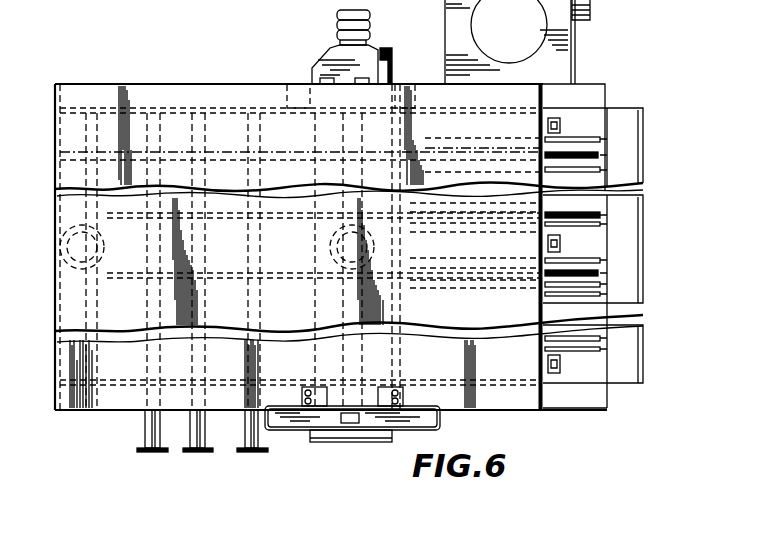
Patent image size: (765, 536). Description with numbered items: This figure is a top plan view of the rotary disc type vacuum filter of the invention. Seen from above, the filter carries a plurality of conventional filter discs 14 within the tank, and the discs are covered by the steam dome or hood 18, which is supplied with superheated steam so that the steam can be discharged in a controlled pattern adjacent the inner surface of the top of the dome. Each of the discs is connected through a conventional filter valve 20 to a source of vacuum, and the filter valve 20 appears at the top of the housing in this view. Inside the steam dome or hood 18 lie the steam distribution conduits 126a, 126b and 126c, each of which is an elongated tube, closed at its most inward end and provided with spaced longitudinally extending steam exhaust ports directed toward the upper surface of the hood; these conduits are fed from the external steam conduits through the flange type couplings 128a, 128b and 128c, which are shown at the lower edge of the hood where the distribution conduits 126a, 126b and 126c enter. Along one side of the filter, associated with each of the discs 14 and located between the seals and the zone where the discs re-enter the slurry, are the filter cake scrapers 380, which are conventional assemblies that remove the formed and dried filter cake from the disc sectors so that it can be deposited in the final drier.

The filter discs 14 is at (100, 152).
The steam dome or hood 18 is at (218, 125).
The filter valve 20 is at (328, 56).
The filter cake scrapers 380 is at (596, 168).
The steam distribution conduit 126a is at (290, 462).
The steam distribution conduit 126b is at (192, 440).
The steam distribution conduit 126c is at (147, 432).
The flange type coupling 128a is at (244, 455).
The flange type coupling 128b is at (210, 452).
The flange type coupling 128c is at (143, 452).